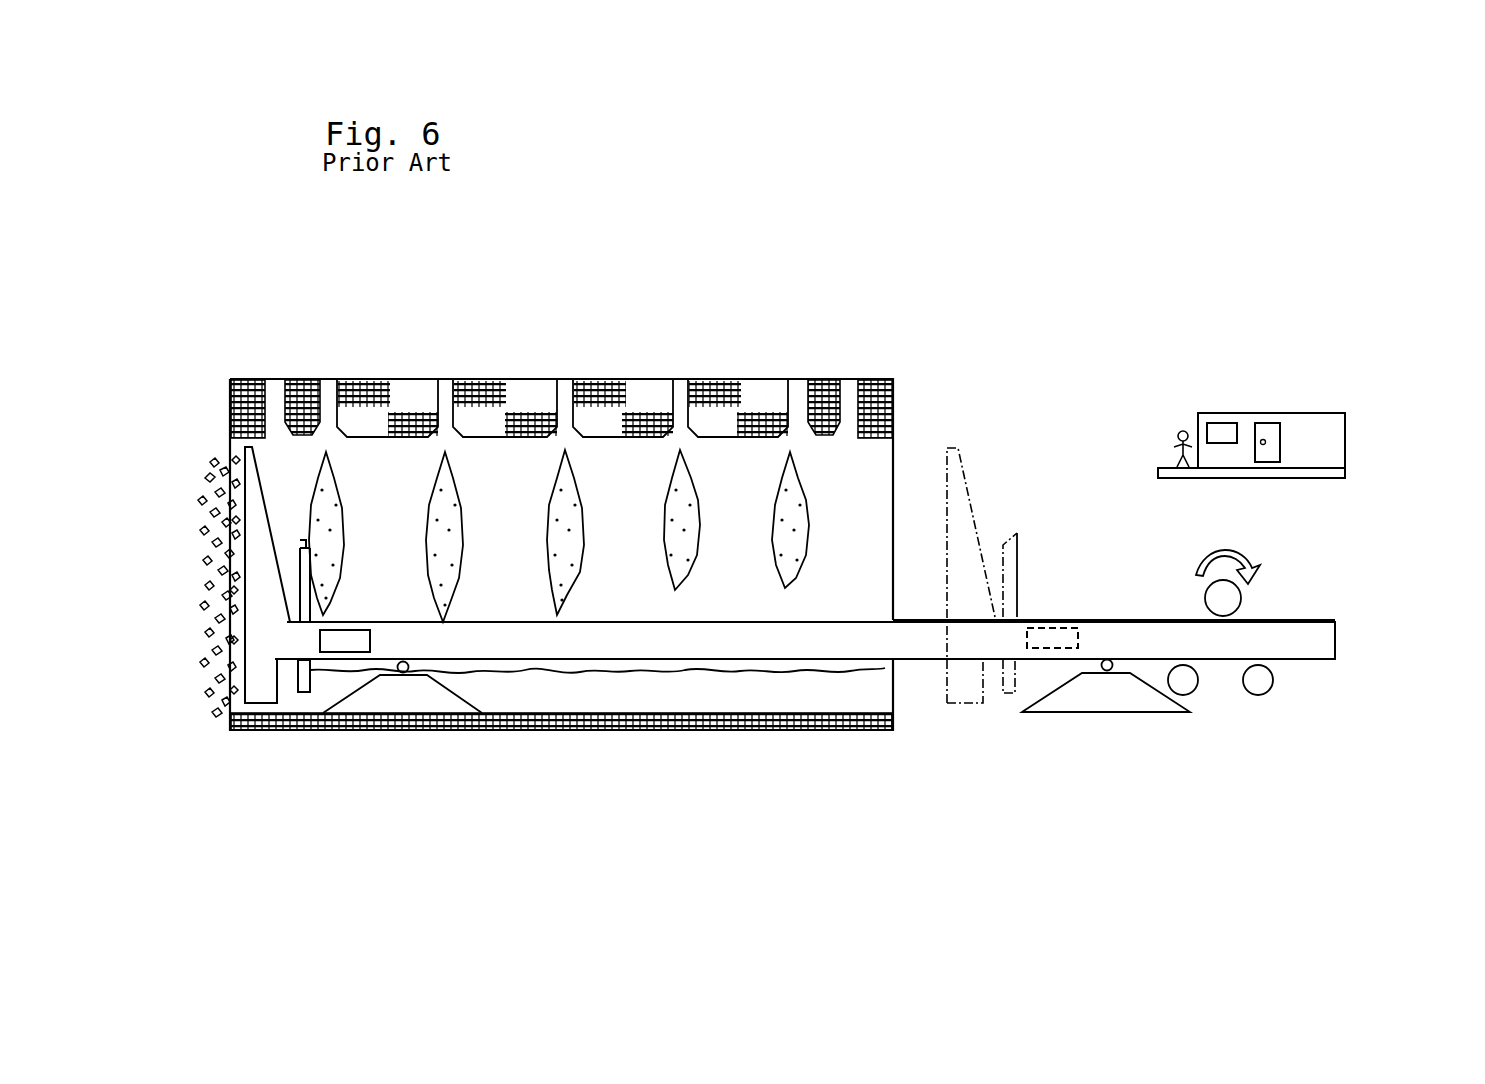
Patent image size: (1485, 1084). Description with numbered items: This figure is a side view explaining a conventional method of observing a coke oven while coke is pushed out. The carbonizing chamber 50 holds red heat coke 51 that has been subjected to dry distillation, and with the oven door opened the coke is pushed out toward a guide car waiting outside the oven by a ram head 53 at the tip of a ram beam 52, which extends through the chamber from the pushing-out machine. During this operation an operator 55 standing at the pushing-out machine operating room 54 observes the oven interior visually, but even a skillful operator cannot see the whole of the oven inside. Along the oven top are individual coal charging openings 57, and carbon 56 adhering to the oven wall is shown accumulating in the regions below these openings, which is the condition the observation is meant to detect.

The carbonizing chamber 50 is at (870, 465).
The red heat coke 51 is at (200, 478).
The ram beam 52 is at (830, 632).
The ram head 53 is at (265, 508).
The pushing-out machine operating room 54 is at (1355, 438).
The operator 55 is at (1178, 434).
The carbon 56 is at (422, 513).
The coal charging openings 57 is at (332, 379).